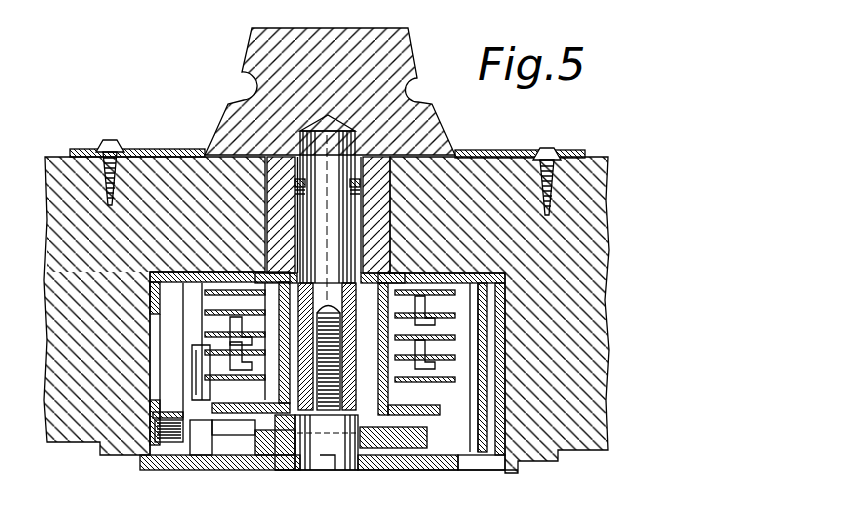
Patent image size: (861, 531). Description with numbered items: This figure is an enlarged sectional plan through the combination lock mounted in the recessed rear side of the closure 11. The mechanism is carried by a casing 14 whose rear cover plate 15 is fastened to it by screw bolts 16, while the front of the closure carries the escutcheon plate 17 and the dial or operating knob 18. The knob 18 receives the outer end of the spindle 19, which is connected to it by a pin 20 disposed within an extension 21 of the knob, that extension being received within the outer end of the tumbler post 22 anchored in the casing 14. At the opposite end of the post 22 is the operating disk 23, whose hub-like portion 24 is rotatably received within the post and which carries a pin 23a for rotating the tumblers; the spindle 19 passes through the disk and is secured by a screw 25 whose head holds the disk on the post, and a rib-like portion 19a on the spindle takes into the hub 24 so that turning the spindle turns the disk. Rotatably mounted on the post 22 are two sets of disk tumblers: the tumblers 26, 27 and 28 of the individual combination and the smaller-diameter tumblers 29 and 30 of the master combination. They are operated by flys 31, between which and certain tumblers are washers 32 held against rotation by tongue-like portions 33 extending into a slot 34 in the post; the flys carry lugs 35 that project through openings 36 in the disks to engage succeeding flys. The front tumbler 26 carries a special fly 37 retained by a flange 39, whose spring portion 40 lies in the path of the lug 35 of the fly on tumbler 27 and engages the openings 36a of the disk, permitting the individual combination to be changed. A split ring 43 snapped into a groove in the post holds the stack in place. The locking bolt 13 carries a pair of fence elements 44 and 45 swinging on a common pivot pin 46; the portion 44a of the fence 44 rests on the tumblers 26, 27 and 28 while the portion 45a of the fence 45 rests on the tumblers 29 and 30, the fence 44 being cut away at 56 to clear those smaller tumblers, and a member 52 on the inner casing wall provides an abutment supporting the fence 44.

The closure 11 is at (605, 234).
The locking bolt 13 is at (403, 443).
The casing 14 is at (505, 362).
The rear cover plate 15 is at (430, 456).
The screw bolts 16 is at (535, 455).
The escutcheon plate 17 is at (487, 152).
The dial or operating knob 18 is at (398, 42).
The control element or spindle 19 is at (350, 247).
The rib-like portion 19a is at (322, 228).
The pin 20 is at (366, 181).
The extension 21 is at (360, 193).
The tumbler post 22 is at (372, 260).
The operating disk 23 is at (435, 425).
The pin 23a is at (165, 462).
The hub-like portion 24 is at (327, 470).
The screw 25 is at (300, 470).
The front tumbler 26 is at (491, 286).
The tumbler 27 is at (500, 330).
The tumbler 28 is at (460, 336).
The tumbler 29 is at (433, 356).
The tumbler 30 is at (480, 386).
The flys 31 is at (460, 318).
The washers 32 is at (236, 378).
The tongue-like portions 33 is at (230, 338).
The slot 34 is at (205, 333).
The lugs 35 is at (220, 400).
The openings 36 is at (205, 311).
The openings or notches 36a is at (392, 275).
The fly 37 is at (458, 273).
The retaining flange 39 is at (460, 307).
The laterally extending portion 40 is at (205, 295).
The split ring 43 is at (262, 270).
The fence element 44 is at (193, 455).
The portion 44a is at (222, 268).
The fence element 45 is at (226, 455).
The portion 45a is at (100, 448).
The pivot pin 46 is at (275, 455).
The member 52 is at (158, 428).
The cut away 56 is at (228, 362).